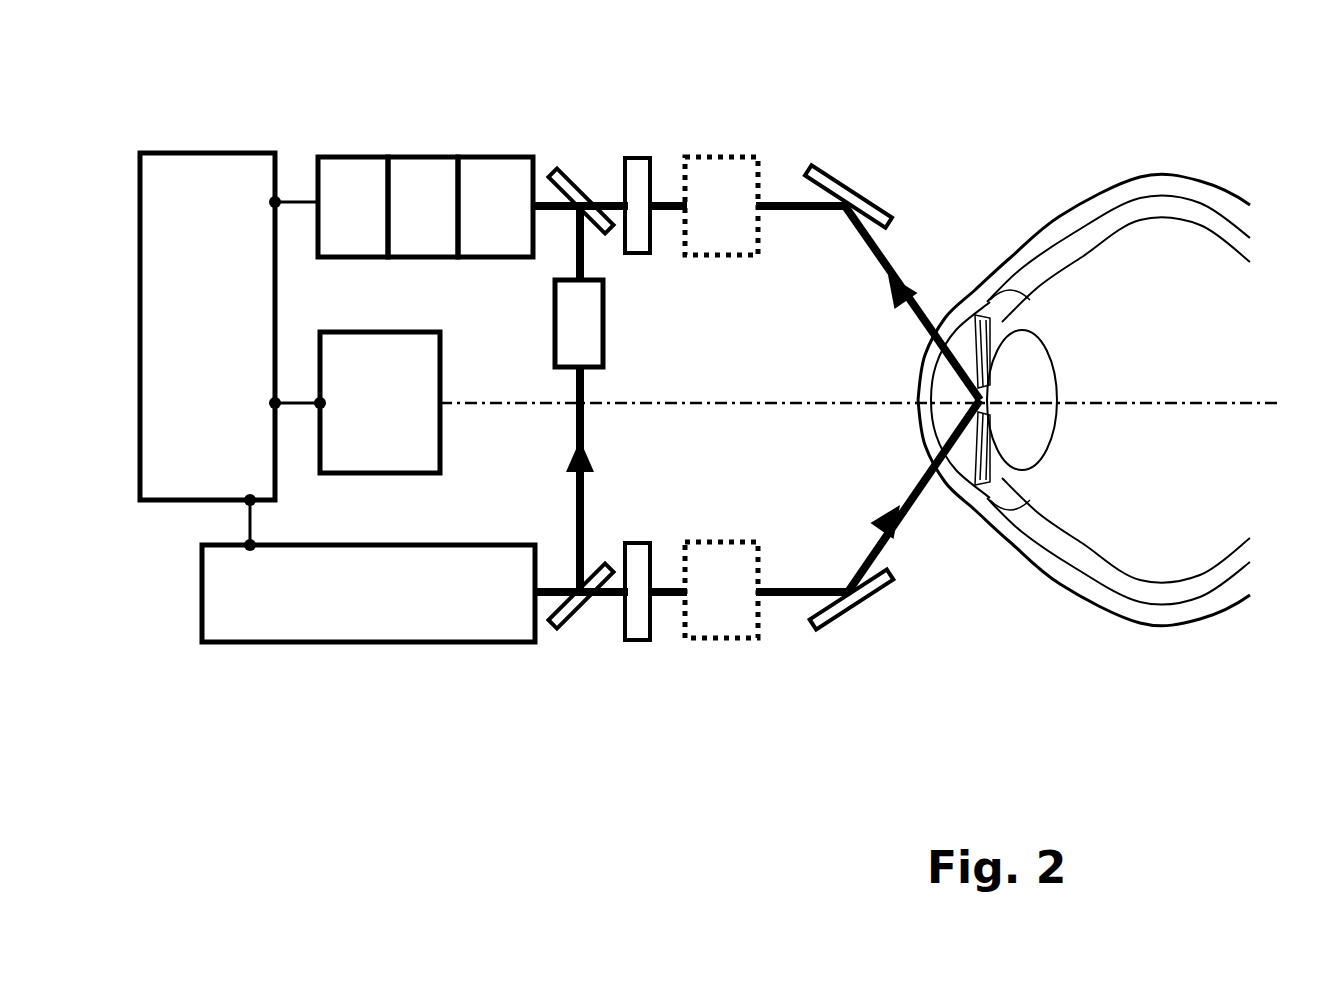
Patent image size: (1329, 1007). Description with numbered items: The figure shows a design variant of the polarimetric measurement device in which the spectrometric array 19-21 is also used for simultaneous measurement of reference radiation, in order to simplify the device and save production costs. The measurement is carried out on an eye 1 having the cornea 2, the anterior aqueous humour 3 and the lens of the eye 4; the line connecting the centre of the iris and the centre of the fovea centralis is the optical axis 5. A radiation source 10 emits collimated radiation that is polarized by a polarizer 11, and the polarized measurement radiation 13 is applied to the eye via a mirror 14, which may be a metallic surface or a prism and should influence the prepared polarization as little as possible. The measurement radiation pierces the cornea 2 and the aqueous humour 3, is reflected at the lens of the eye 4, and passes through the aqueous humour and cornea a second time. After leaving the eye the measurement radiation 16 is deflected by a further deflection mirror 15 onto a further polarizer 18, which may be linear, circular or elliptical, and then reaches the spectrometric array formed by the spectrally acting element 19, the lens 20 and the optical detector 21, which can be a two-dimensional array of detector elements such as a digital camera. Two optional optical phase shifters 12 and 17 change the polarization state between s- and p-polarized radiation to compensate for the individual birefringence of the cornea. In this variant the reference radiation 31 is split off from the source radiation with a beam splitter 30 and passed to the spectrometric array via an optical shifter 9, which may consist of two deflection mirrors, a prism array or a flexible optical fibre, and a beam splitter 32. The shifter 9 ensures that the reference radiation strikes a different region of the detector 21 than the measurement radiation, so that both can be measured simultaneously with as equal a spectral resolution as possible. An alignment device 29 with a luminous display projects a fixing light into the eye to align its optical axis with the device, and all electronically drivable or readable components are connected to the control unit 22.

The eye 1 is at (1097, 628).
The cornea 2 is at (962, 490).
The anterior aqueous humour 3 is at (945, 390).
The lens of the eye 4 is at (1030, 380).
The optical axis 5 is at (1265, 403).
The optical shifter 9 is at (603, 348).
The radiation source 10 is at (485, 545).
The polarizer 11 is at (637, 640).
The optical phase shifter 12 is at (720, 640).
The polarized measurement radiation 13 is at (782, 597).
The mirror 14 is at (861, 625).
The deflection mirror 15 is at (850, 187).
The measurement radiation 16 is at (780, 200).
The optical phase shifter 17 is at (720, 157).
The further polarizer 18 is at (640, 157).
The spectrally acting element 19 is at (485, 157).
The lens 20 is at (425, 157).
The optical detector 21 is at (370, 157).
The control unit 22 is at (215, 153).
The alignment device 29 is at (440, 362).
The beam splitter 30 is at (578, 630).
The reference radiation 31 is at (586, 482).
The beam splitter 32 is at (570, 162).